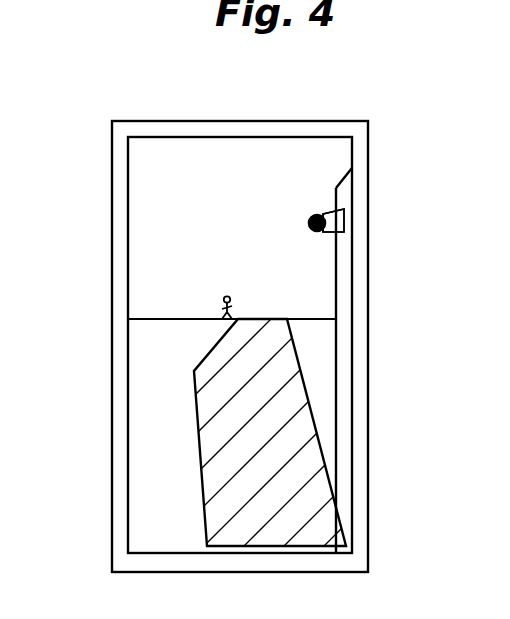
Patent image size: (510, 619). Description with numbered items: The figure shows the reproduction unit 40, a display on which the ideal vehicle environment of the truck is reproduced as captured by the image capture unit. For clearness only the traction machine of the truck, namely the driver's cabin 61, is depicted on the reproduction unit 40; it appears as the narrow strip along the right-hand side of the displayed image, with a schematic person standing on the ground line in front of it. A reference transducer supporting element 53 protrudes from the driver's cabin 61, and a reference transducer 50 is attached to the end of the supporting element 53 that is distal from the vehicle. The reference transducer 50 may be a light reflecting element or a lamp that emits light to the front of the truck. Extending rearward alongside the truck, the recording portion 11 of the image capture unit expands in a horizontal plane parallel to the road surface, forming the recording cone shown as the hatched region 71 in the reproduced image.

The reproduction unit 40 is at (112, 147).
The recording portion 11 is at (190, 266).
The reference transducer 50 is at (326, 218).
The reference transducer supporting element 53 is at (343, 227).
The driver's cabin 61 is at (343, 415).
The hatched region (field of view) 71 is at (213, 432).